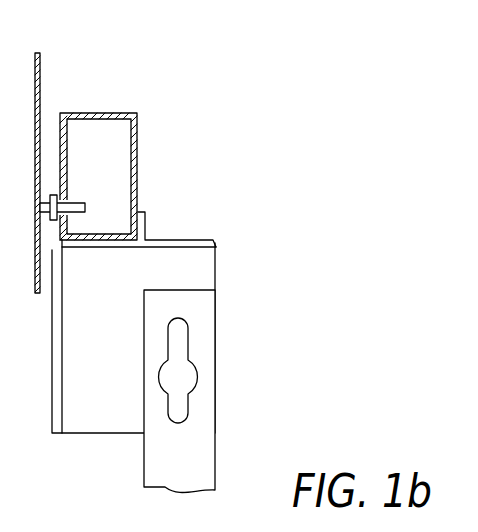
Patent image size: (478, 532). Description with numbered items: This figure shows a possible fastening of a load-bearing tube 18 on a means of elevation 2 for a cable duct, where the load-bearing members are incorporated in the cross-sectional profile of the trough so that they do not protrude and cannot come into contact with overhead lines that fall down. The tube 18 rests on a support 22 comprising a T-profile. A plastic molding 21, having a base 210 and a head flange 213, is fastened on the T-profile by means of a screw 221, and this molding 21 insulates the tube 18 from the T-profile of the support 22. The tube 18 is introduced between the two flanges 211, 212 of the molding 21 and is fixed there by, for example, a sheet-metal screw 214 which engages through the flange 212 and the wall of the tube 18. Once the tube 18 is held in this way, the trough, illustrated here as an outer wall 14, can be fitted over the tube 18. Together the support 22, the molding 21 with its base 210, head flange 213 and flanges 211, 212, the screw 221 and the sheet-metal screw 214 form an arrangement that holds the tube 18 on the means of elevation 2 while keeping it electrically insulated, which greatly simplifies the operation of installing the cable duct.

The outer wall 14 is at (40, 62).
The tube 18 is at (83, 115).
The means of elevation 2 is at (181, 347).
The plastic molding 21 is at (178, 317).
The support 22 is at (227, 391).
The base 210 is at (214, 244).
The flange 211 is at (147, 219).
The flange 212 is at (78, 222).
The head flange 213 is at (62, 287).
The sheet-metal screw 214 is at (82, 205).
The screw 221 is at (190, 380).